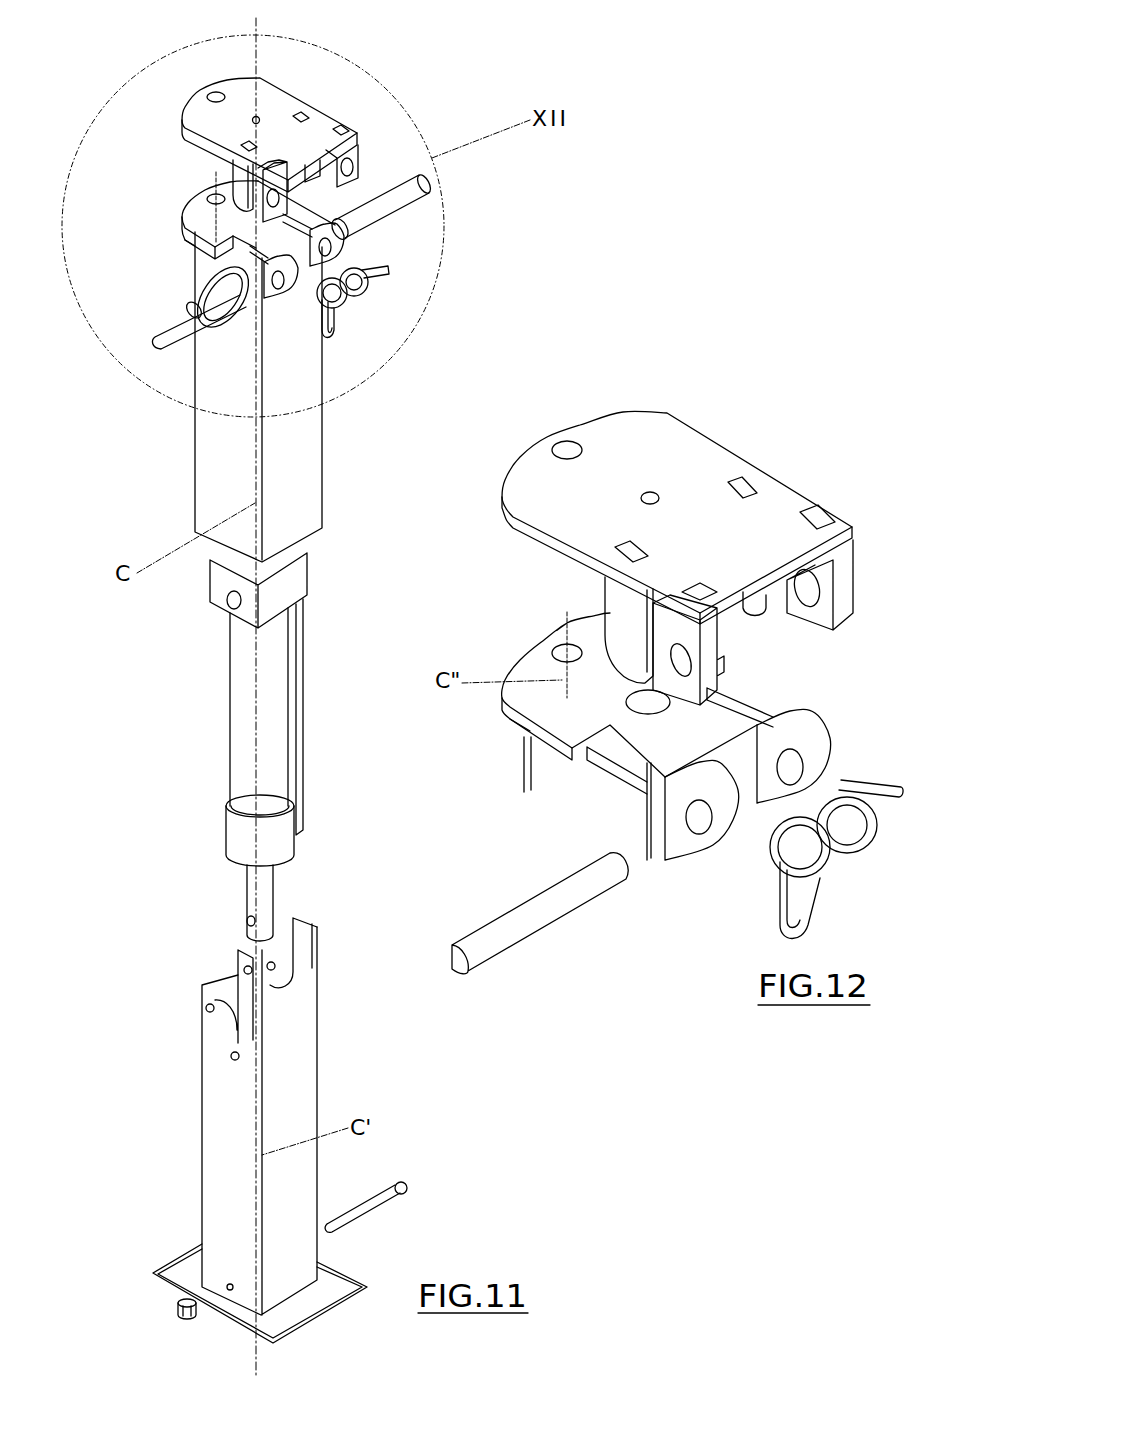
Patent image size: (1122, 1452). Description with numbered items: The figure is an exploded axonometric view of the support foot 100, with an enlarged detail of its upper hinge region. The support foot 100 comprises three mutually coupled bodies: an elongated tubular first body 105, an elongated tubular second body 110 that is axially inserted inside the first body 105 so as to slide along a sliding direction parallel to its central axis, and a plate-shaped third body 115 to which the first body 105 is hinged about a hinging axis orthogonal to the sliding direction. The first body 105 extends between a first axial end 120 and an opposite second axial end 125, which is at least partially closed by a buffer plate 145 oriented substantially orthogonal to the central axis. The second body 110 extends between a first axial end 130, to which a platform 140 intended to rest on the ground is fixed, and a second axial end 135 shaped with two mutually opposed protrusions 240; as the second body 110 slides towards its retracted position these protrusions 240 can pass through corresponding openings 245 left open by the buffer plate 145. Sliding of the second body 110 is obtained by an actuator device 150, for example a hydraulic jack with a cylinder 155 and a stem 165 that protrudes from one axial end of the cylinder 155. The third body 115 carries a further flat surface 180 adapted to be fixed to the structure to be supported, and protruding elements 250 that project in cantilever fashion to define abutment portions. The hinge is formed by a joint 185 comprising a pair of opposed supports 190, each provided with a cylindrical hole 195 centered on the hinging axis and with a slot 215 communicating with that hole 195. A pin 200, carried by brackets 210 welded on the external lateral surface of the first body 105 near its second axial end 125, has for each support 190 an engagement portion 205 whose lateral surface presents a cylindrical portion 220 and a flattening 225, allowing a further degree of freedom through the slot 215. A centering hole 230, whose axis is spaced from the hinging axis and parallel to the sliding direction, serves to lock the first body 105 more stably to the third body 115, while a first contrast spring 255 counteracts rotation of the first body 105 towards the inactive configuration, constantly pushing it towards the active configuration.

In FIG. 11, the support foot 100 is at (132, 108).
In FIG. 11, the first body 105 is at (218, 455).
In FIG. 11, the second body 110 is at (215, 1140).
In FIG. 11, the third body 115 is at (316, 128).
In FIG. 12, the third body 115 is at (530, 490).
In FIG. 11, the first axial end 120 is at (318, 545).
In FIG. 11, the second axial end 125 is at (200, 218).
In FIG. 11, the first axial end 130 is at (305, 1300).
In FIG. 11, the second axial end 135 is at (322, 900).
In FIG. 11, the platform 140 is at (175, 1290).
In FIG. 11, the buffer plate 145 is at (183, 232).
In FIG. 12, the buffer plate 145 is at (545, 720).
In FIG. 11, the actuator device 150 is at (212, 700).
In FIG. 11, the cylinder 155 is at (250, 745).
In FIG. 11, the stem 165 is at (255, 885).
In FIG. 11, the further flat surface 180 is at (285, 100).
In FIG. 12, the further flat surface 180 is at (668, 450).
In FIG. 11, the joint 185 is at (390, 297).
In FIG. 11, the support 190 is at (302, 204).
In FIG. 12, the support 190 is at (712, 640).
In FIG. 12, the cylindrical hole 195 is at (650, 702).
In FIG. 11, the pin 200 is at (200, 325).
In FIG. 12, the pin 200 is at (546, 913).
In FIG. 12, the engagement portion 205 is at (625, 880).
In FIG. 11, the bracket 210 is at (342, 250).
In FIG. 12, the bracket 210 is at (810, 758).
In FIG. 12, the slot 215 is at (835, 580).
In FIG. 12, the cylindrical portion 220 is at (628, 872).
In FIG. 12, the flattening 225 is at (600, 855).
In FIG. 12, the centering hole 230 is at (562, 650).
In FIG. 11, the protrusion 240 is at (320, 938).
In FIG. 12, the opening 245 is at (772, 732).
In FIG. 11, the protruding element 250 is at (245, 178).
In FIG. 12, the protruding element 250 is at (622, 612).
In FIG. 12, the first contrast spring 255 is at (830, 870).